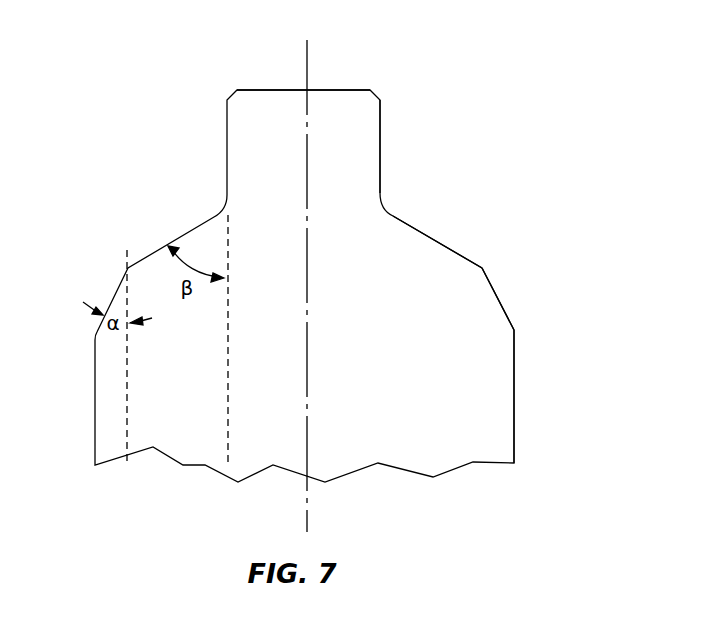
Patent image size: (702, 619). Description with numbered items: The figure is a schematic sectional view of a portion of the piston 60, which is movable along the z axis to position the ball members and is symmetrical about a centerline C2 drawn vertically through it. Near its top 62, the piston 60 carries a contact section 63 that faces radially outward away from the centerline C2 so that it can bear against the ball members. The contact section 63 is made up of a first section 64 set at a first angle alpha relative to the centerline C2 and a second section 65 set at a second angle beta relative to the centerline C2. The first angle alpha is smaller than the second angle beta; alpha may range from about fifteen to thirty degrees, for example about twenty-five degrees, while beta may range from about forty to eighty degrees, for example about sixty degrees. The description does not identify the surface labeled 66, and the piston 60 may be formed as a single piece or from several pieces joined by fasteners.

The piston 60 is at (117, 141).
The centerline C2 is at (307, 55).
The top 62 is at (343, 90).
The contact section 63 is at (514, 375).
The first section 64 is at (500, 300).
The second section 65 is at (432, 237).
The head side surface 66 is at (365, 150).